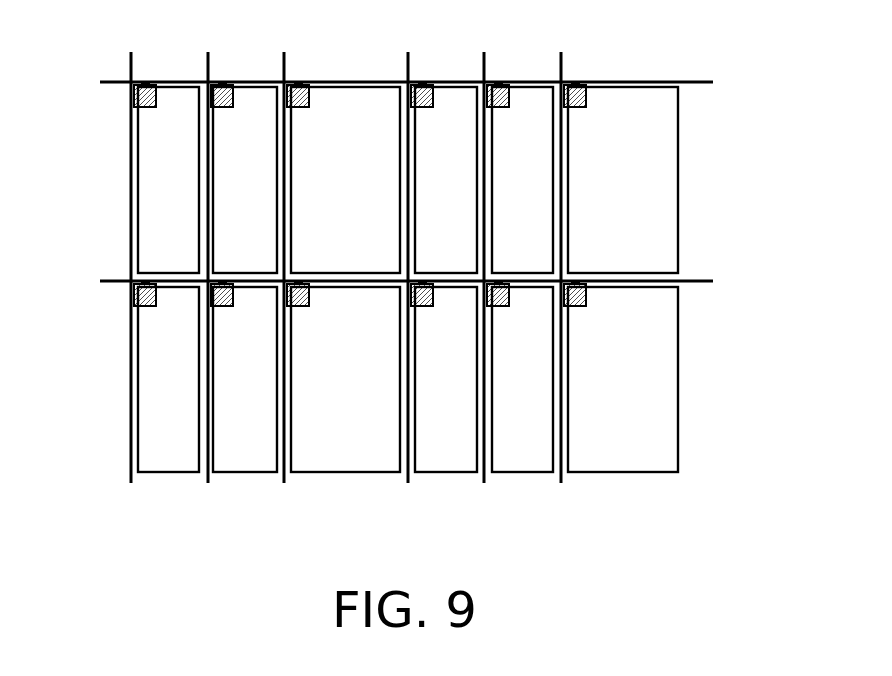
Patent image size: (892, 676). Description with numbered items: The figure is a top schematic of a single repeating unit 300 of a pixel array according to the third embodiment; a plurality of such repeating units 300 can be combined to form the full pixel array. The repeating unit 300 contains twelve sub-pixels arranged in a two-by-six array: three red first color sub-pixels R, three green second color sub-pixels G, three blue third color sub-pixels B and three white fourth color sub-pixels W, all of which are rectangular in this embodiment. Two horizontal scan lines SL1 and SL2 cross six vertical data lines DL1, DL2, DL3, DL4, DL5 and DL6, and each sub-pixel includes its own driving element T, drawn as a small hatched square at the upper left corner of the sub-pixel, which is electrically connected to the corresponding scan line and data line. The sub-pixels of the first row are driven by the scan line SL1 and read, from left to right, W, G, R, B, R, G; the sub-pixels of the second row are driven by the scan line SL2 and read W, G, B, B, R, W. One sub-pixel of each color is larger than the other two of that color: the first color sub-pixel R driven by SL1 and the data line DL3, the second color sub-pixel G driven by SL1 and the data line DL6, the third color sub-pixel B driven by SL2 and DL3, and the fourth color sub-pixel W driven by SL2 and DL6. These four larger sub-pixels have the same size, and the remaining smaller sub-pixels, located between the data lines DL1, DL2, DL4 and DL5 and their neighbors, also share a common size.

The data line DL1 is at (130, 248).
The data line DL2 is at (210, 248).
The data line DL3 is at (286, 248).
The data line DL4 is at (410, 248).
The data line DL5 is at (487, 248).
The data line DL6 is at (563, 248).
The scan line SL1 is at (381, 81).
The scan line SL2 is at (381, 282).
The driving element T is at (131, 96).
The repeating unit 300 is at (802, 538).